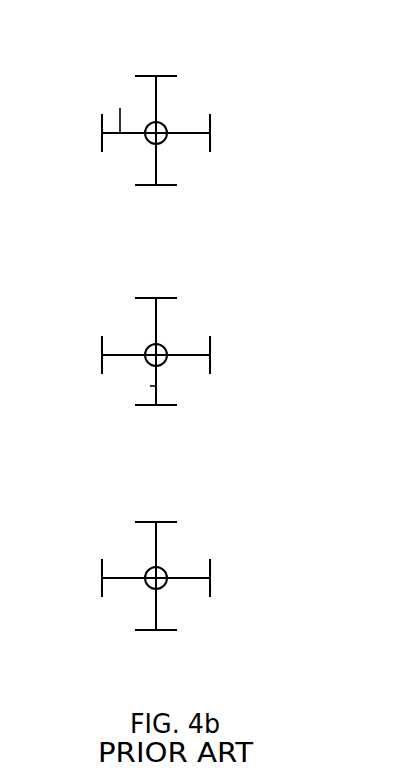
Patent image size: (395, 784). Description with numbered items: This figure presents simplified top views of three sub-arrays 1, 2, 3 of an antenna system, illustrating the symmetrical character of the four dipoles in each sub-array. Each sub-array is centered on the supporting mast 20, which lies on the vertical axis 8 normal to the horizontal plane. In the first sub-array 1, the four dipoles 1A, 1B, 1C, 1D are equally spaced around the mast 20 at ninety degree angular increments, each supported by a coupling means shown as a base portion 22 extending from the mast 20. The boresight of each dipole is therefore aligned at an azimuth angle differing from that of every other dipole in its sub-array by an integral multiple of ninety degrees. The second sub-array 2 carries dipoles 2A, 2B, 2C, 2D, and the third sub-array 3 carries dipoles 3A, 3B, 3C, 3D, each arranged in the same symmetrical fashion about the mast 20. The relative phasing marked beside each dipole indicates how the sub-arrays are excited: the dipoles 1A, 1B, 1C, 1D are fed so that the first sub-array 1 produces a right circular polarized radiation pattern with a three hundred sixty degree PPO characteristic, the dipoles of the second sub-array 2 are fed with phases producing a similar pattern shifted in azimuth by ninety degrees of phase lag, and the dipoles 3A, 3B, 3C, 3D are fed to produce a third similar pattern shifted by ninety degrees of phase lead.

The sub-array 1 is at (250, 388).
The dipole 1A is at (213, 342).
The dipole 1B is at (173, 295).
The dipole 1C is at (102, 340).
The dipole 1D is at (150, 408).
The sub-array 2 is at (250, 166).
The dipole 2A is at (214, 123).
The dipole 2B is at (173, 73).
The dipole 2C is at (100, 135).
The dipole 2D is at (150, 188).
The sub-array 3 is at (250, 601).
The dipole 3A is at (212, 597).
The dipole 3B is at (173, 520).
The dipole 3C is at (102, 575).
The dipole 3D is at (150, 632).
The vertical axis 8 is at (158, 355).
The mast 20 is at (150, 587).
The base portion 22 is at (155, 116).